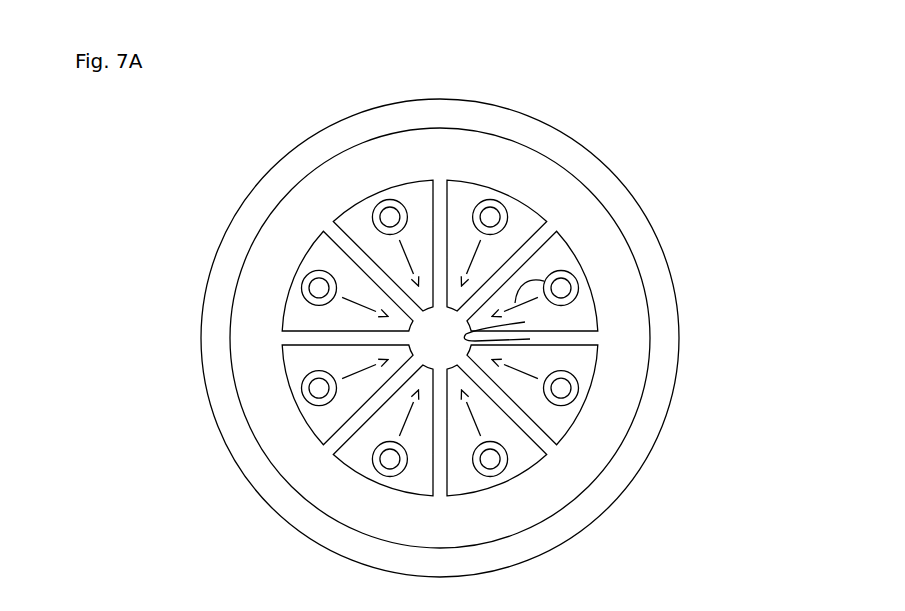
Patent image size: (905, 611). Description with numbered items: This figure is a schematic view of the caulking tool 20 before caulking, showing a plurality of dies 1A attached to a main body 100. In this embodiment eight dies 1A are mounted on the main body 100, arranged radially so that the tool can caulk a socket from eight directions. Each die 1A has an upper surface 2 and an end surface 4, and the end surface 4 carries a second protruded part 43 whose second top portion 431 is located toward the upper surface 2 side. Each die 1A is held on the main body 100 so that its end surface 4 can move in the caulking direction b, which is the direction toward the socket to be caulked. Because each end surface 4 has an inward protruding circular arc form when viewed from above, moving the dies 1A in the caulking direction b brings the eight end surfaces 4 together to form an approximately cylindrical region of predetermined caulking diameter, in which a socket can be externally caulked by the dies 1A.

The caulking tool 20 is at (692, 84).
The main body 100 is at (254, 168).
The upper surface 2 is at (556, 250).
The die 1A is at (583, 246).
The caulking direction b is at (549, 276).
The end surface 4 is at (525, 322).
The second protruded part 43 is at (472, 330).
The second top portion 431 is at (467, 334).